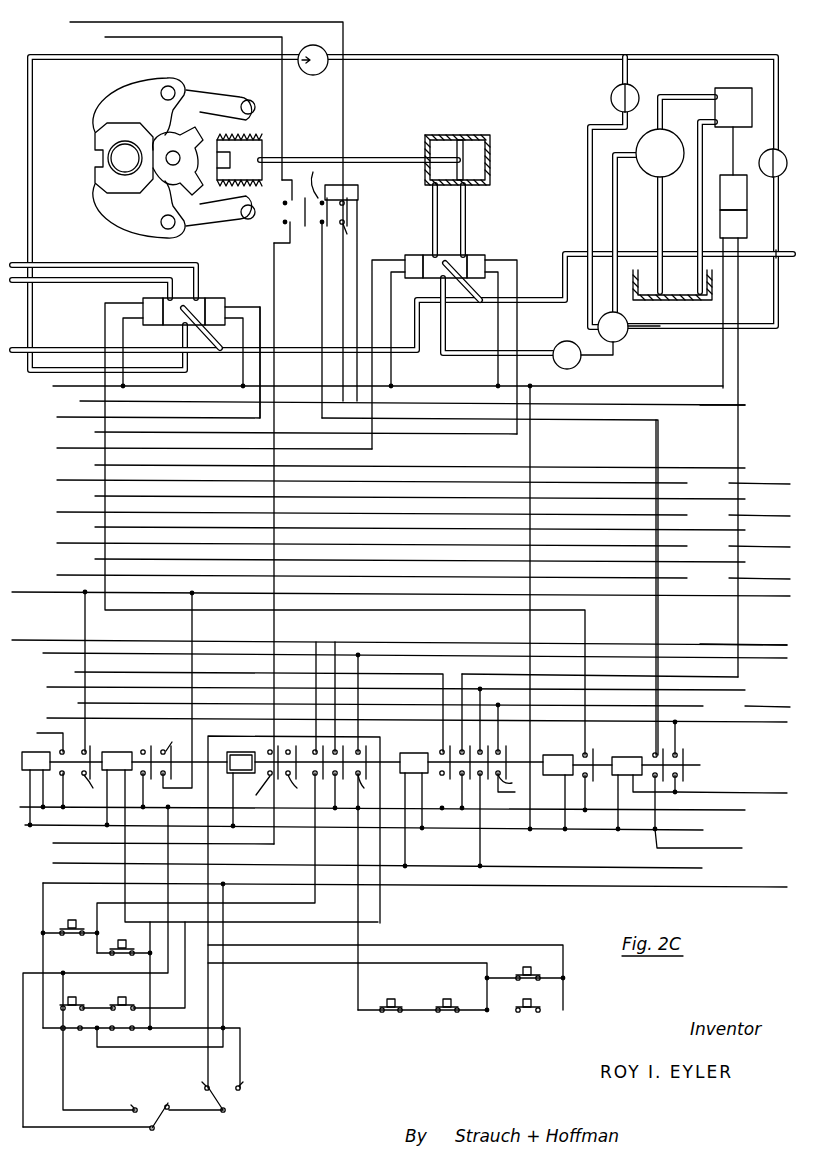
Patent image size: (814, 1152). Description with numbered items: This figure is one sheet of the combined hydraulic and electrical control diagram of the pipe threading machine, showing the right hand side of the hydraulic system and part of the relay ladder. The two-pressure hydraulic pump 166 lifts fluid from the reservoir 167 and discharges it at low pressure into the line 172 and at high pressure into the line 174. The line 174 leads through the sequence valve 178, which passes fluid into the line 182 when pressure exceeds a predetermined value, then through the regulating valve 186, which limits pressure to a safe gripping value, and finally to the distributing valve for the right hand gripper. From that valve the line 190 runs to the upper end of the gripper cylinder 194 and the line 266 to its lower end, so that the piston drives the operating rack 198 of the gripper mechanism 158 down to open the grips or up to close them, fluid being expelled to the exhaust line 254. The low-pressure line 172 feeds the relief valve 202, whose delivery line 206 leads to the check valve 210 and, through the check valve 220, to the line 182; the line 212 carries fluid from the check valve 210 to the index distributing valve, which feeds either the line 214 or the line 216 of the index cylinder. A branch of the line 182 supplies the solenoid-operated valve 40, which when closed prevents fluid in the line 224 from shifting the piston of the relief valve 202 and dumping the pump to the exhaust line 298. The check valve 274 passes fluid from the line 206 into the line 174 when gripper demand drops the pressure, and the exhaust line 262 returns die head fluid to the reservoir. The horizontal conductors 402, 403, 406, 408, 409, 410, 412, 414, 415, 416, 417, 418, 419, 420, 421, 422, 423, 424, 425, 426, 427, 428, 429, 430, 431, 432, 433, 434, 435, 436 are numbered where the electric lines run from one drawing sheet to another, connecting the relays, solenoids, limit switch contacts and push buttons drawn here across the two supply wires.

The gripper mechanism 158 is at (103, 101).
The operating rack 198 is at (264, 150).
The check valve 210 is at (327, 67).
The delivery line 206 is at (514, 56).
The gripper cylinder 194 is at (443, 135).
The line 190 is at (426, 185).
The line 266 is at (484, 188).
The check valve 274 is at (612, 89).
The low-pressure line 172 is at (660, 95).
The line 224 is at (733, 133).
The relief valve 202 is at (733, 131).
The two-pressure hydraulic pump 166 is at (660, 153).
The check valve 220 is at (760, 157).
The exhaust line 298 is at (698, 178).
The high-pressure line 174 is at (623, 203).
The solenoid-operated spring-return valve 40 is at (720, 225).
The exhaust line 262 is at (750, 254).
The reservoir 167 is at (671, 292).
The line 182 is at (653, 326).
The sequence valve 178 is at (620, 334).
The regulating valve 186 is at (567, 370).
The line 214 is at (83, 263).
The line 216 is at (40, 283).
The exhaust line 254 is at (57, 350).
The line 212 is at (173, 368).
The electric line 402 is at (10, 465).
The electric line 403 is at (56, 597).
The electric line 406 is at (10, 480).
The electric line 408 is at (53, 863).
The electric line 409 is at (0, 718).
The electric line 410 is at (10, 496).
The electric line 412 is at (0, 687).
The electric line 414 is at (15, 37).
The electric line 415 is at (17, 22).
The electric line 416 is at (10, 672).
The electric line 417 is at (10, 512).
The electric line 418 is at (10, 527).
The electric line 419 is at (10, 432).
The electric line 420 is at (10, 448).
The electric line 421 is at (10, 543).
The electric line 422 is at (10, 417).
The electric line 423 is at (10, 401).
The electric line 424 is at (53, 843).
The electric line 425 is at (10, 559).
The electric line 426 is at (43, 884).
The electric line 427 is at (10, 703).
The electric line 428 is at (40, 739).
The electric line 429 is at (10, 575).
The electric line 430 is at (0, 653).
The conductor 431 is at (54, 638).
The conductor 432 is at (790, 405).
The conductor 433 is at (748, 633).
The conductor 434 is at (748, 707).
The conductor 435 is at (737, 792).
The conductor 436 is at (790, 848).